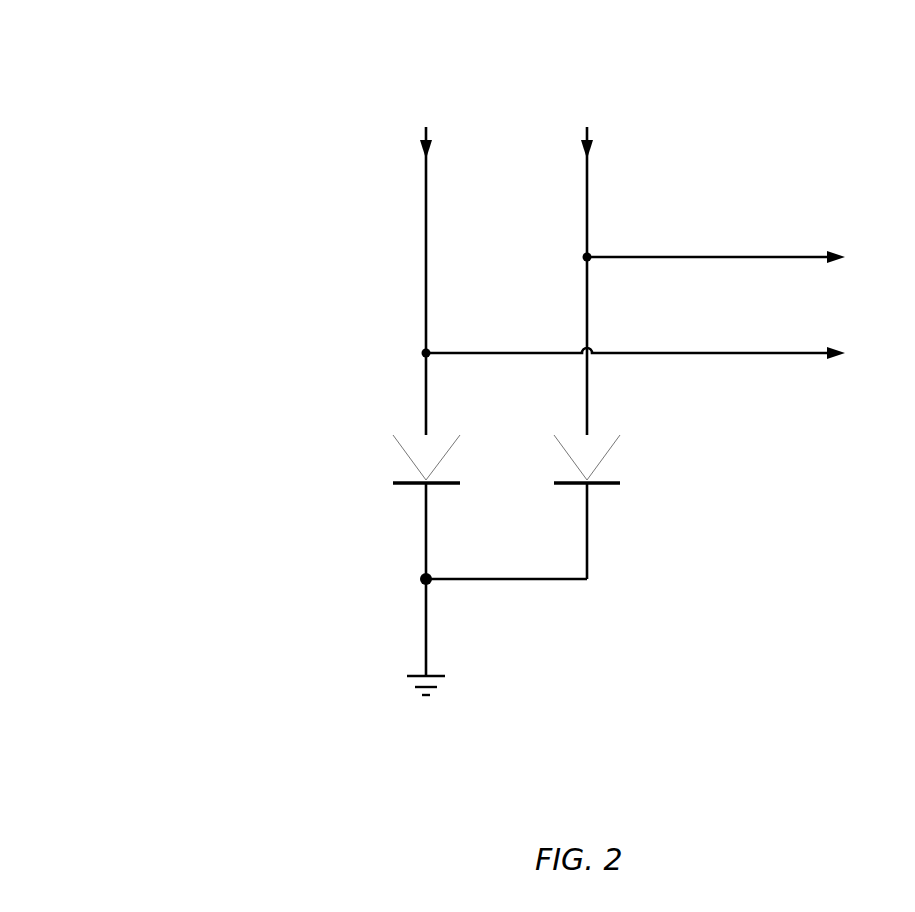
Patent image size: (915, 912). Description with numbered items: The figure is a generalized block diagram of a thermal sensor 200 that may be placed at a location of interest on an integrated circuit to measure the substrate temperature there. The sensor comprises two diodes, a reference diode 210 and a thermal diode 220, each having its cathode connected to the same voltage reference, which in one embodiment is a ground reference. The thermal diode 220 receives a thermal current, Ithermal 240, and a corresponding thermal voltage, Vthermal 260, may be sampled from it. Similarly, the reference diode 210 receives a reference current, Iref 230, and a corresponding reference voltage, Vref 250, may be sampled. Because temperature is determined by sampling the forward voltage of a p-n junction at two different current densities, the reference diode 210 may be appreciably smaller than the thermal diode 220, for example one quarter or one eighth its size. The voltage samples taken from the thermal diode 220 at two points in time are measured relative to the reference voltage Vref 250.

The thermal sensor 200 is at (466, 353).
The reference diode 210 is at (410, 460).
The thermal diode 220 is at (603, 458).
The reference current Iref 230 is at (423, 135).
The thermal current Ithermal 240 is at (589, 133).
The reference voltage Vref 250 is at (797, 353).
The thermal voltage Vthermal 260 is at (732, 257).